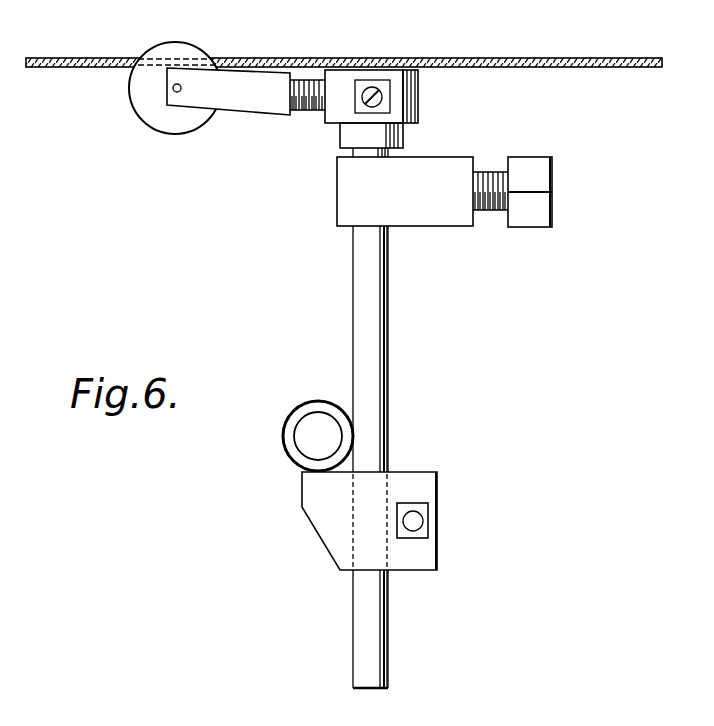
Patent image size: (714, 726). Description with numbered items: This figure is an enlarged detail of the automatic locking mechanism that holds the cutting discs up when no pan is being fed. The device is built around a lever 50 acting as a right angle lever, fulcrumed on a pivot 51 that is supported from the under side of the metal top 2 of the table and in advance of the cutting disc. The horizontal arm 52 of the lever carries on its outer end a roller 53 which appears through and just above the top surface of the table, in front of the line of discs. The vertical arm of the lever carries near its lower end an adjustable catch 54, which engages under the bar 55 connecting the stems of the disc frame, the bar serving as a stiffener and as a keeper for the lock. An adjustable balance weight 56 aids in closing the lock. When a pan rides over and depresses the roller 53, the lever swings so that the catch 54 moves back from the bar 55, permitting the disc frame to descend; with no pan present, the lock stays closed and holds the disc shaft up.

The metal top 2 is at (80, 58).
The lever 50 is at (353, 276).
The pivot 51 is at (382, 100).
The horizontal arm 52 is at (242, 111).
The roller 53 is at (143, 109).
The adjustable catch 54 is at (330, 535).
The bar 55 is at (292, 429).
The adjustable balance weight 56 is at (533, 220).